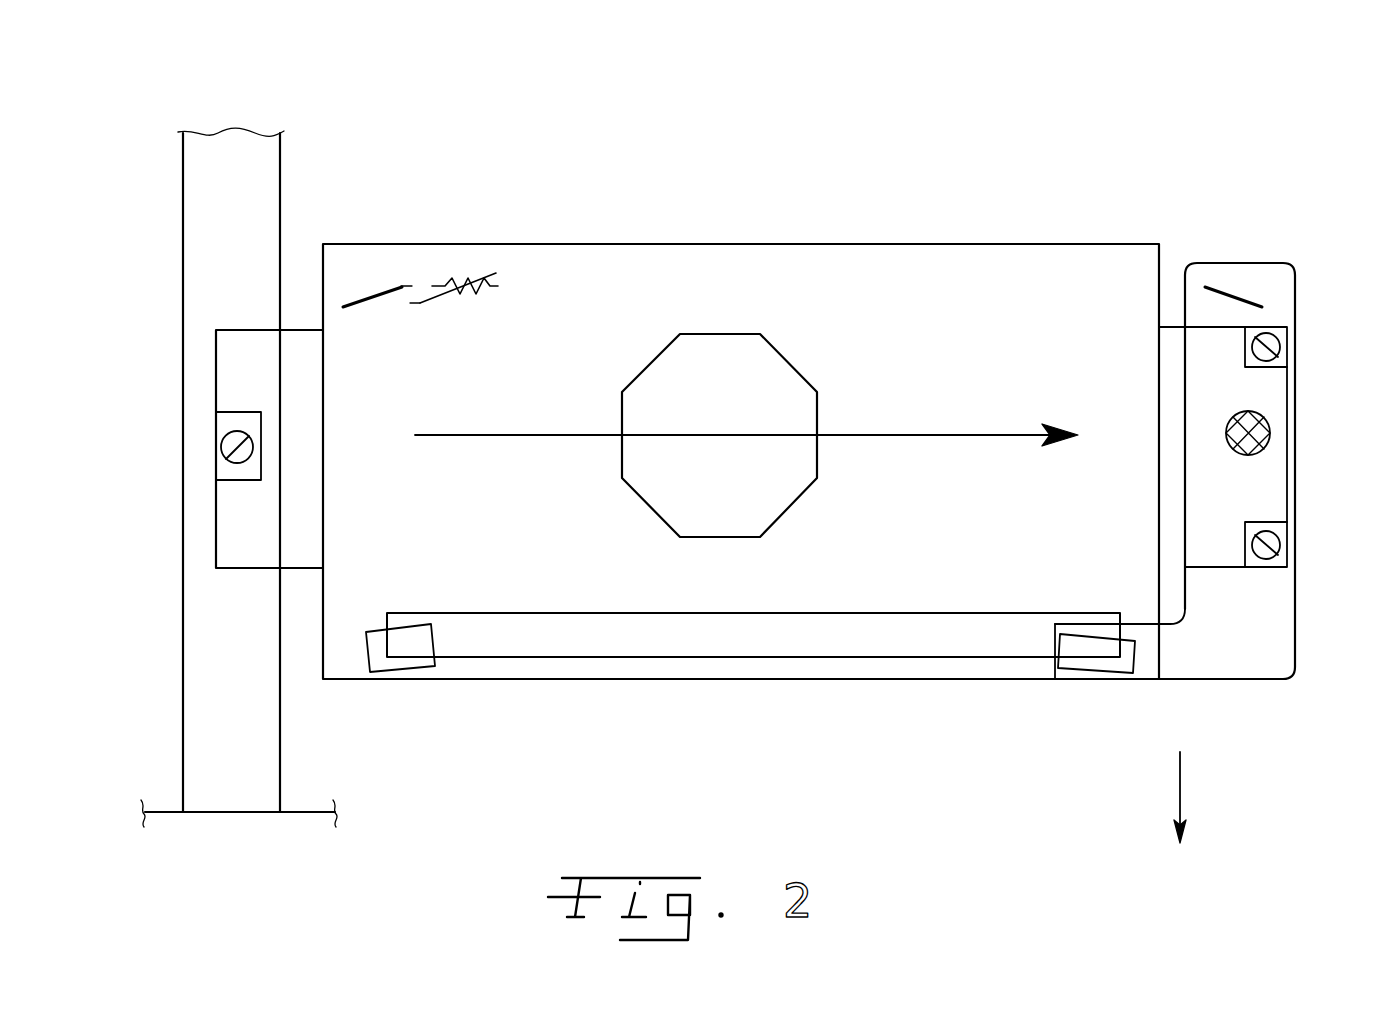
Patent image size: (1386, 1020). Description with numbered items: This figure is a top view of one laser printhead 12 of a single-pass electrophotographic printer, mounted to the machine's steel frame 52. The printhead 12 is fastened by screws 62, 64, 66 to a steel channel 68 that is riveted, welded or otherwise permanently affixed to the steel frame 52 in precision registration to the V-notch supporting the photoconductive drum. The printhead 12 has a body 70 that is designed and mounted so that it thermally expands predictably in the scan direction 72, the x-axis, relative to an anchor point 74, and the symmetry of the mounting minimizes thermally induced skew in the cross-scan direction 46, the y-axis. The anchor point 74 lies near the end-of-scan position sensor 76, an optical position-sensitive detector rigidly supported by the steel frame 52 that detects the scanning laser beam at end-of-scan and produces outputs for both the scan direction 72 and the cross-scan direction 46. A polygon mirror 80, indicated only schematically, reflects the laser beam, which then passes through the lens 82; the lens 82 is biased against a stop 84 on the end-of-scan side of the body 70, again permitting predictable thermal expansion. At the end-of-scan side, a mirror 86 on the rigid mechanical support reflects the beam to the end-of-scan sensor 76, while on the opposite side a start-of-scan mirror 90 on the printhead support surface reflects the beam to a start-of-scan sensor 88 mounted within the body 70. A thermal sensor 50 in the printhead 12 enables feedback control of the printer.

The laser printhead 12 is at (1128, 165).
The cross-scan direction 46 is at (1182, 779).
The thermal sensor 50 is at (465, 286).
The steel frame 52 is at (239, 826).
The screw 62 is at (216, 447).
The screw 64 is at (1283, 342).
The screw 66 is at (1283, 550).
The steel channel 68 is at (258, 679).
The printhead body 70 is at (1056, 304).
The scan direction 72 is at (448, 437).
The anchor point 74 is at (1258, 423).
The end-of-scan position sensor 76 is at (1236, 297).
The polygon mirror 80 is at (740, 390).
The lens 82 is at (753, 635).
The stop 84 is at (1147, 635).
The mirror 86 is at (1095, 665).
The start-of-scan sensor 88 is at (371, 296).
The start-of-scan mirror 90 is at (393, 665).